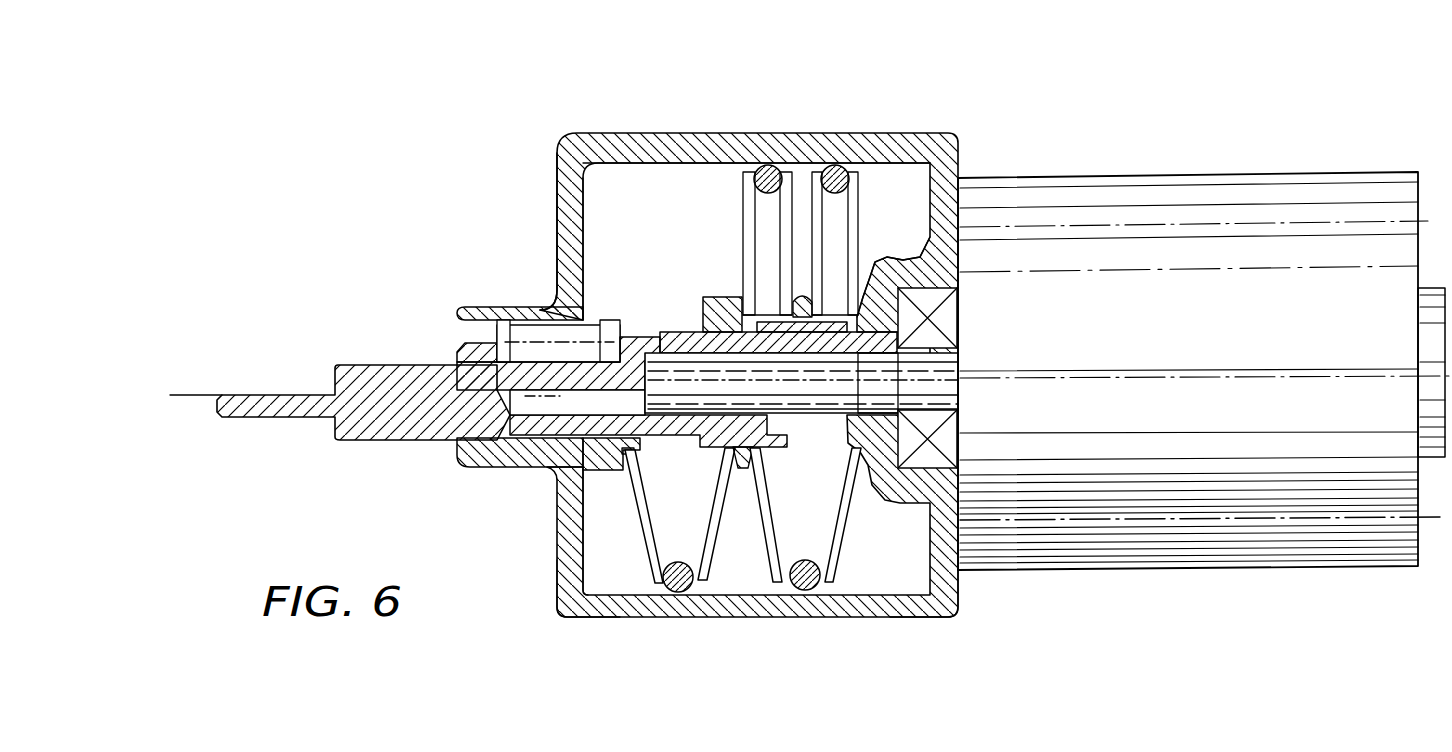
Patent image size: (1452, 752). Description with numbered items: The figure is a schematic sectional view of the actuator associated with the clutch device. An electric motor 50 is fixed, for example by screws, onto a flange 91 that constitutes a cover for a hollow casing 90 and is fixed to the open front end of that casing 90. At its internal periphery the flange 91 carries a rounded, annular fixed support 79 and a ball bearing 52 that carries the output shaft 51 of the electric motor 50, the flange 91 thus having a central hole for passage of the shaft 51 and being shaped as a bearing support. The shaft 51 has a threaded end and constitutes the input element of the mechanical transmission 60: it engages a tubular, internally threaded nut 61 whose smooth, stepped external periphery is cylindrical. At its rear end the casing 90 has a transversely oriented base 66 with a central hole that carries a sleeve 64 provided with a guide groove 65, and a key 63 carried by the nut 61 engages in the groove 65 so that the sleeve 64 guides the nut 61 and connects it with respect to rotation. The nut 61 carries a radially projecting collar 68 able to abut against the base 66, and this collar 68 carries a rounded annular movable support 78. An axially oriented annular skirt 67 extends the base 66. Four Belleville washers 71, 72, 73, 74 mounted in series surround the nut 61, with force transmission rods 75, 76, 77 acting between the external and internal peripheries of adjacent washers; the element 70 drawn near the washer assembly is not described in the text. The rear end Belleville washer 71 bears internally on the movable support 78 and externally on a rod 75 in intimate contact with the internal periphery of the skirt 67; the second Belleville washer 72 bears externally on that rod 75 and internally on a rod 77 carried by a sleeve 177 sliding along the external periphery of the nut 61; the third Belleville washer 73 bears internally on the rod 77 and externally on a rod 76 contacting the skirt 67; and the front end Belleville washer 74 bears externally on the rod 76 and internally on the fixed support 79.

The electric motor 50 is at (1120, 172).
The shaft 51 is at (840, 540).
The ball bearing 52 is at (942, 317).
The mechanical transmission 60 is at (630, 307).
The nut 61 is at (397, 418).
The key 63 is at (533, 340).
The sleeve 64 is at (488, 463).
The guide groove 65 is at (460, 333).
The base 66 is at (558, 260).
The skirt 67 is at (668, 588).
The collar 68 is at (600, 470).
The brush holder pedestal 70 is at (740, 262).
The rear end Belleville washer 71 is at (643, 555).
The second Belleville washer 72 is at (722, 550).
The third Belleville washer 73 is at (753, 543).
The front end Belleville washer 74 is at (877, 393).
The rod 75 is at (766, 165).
The rod 76 is at (833, 165).
The rod 77 is at (740, 475).
The movable support 78 is at (615, 472).
The fixed support 79 is at (855, 297).
The casing 90 is at (568, 616).
The flange 91 is at (968, 595).
The sleeve 177 is at (700, 413).